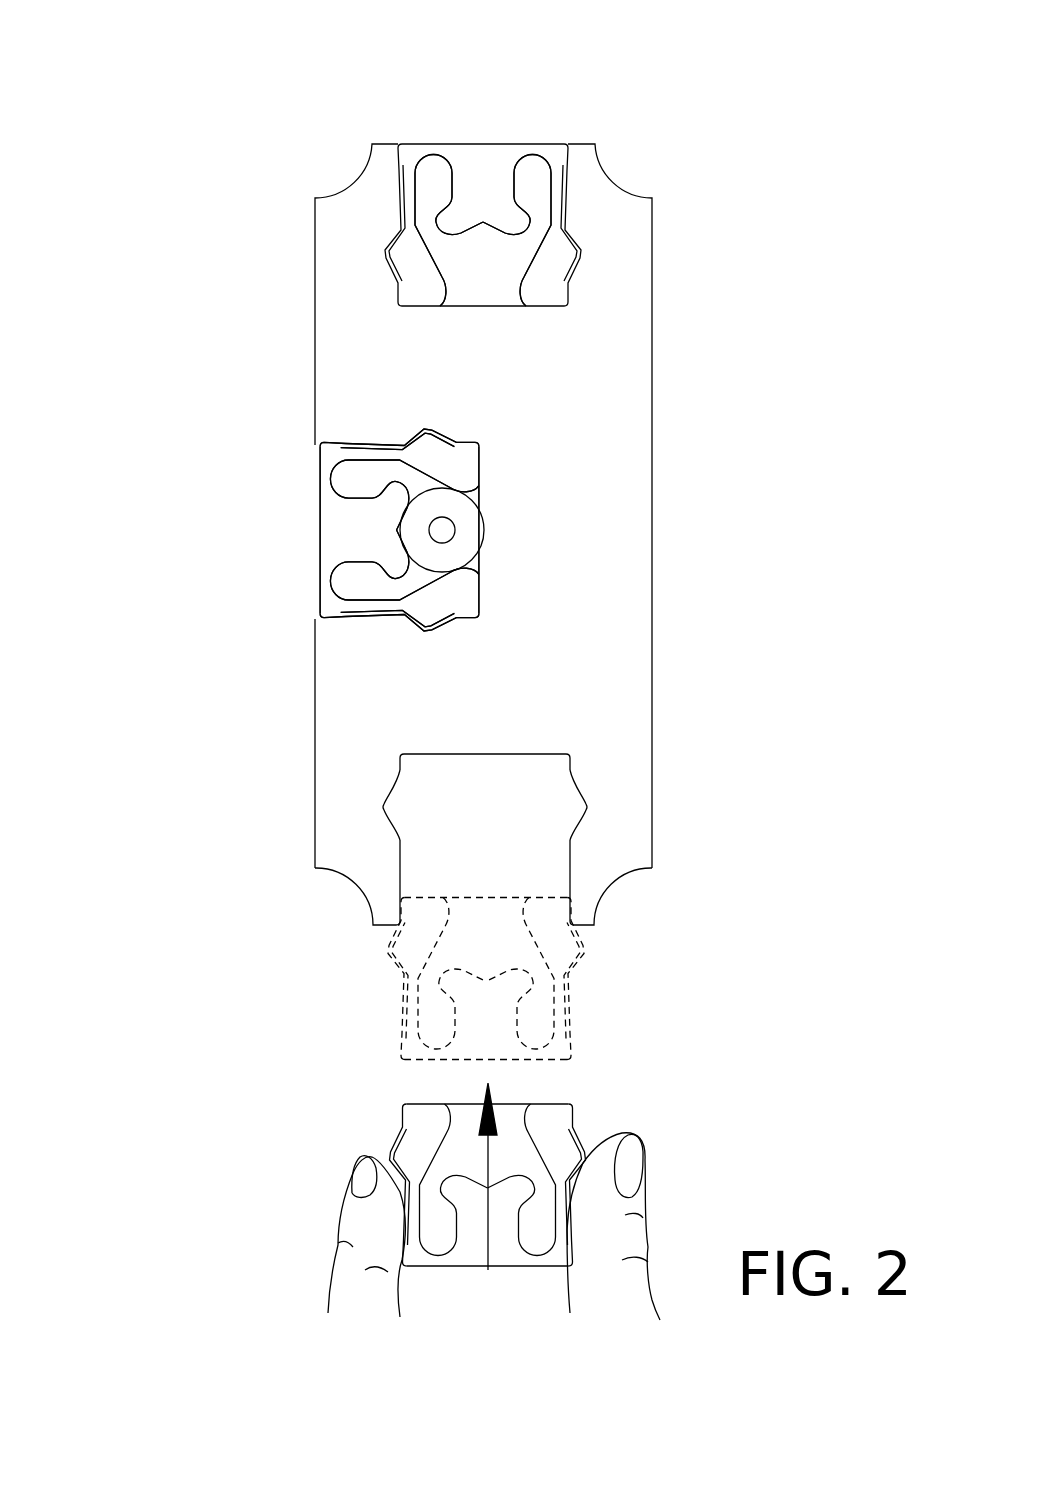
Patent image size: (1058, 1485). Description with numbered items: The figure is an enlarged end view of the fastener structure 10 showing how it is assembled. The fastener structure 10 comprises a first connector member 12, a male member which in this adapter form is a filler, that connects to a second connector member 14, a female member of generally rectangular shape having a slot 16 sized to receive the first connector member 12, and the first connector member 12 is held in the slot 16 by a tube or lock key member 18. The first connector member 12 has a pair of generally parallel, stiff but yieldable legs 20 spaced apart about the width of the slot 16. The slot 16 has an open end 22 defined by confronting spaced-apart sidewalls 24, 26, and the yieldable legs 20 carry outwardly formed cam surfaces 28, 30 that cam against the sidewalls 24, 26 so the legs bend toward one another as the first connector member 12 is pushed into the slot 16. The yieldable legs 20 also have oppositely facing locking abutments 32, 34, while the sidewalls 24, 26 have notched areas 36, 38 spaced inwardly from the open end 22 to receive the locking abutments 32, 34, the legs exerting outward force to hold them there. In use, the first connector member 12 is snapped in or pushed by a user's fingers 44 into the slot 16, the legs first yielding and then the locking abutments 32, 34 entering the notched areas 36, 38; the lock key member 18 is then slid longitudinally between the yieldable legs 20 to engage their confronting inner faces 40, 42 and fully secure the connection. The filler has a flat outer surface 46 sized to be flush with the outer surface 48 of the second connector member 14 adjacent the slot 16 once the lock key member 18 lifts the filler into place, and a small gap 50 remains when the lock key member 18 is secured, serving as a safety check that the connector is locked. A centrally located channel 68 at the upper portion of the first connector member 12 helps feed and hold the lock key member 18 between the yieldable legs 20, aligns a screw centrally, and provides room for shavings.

The fastener structure 10 is at (310, 137).
The first connector member 12 is at (337, 507).
The second connector member 14 is at (583, 482).
The slot 16 is at (497, 795).
The lock key member 18 is at (425, 547).
The yieldable legs 20 is at (457, 467).
The open end 22 is at (483, 907).
The sidewall 24 is at (400, 880).
The sidewall 26 is at (572, 873).
The cam surface 28 is at (452, 432).
The cam surface 30 is at (452, 627).
The locking abutment 32 is at (428, 617).
The locking abutment 34 is at (428, 440).
The notched area 36 is at (382, 808).
The notched area 38 is at (588, 808).
The inner face 40 is at (438, 277).
The inner face 42 is at (523, 282).
The user's fingers 44 is at (637, 1250).
The flat outer surface 46 is at (315, 593).
The outer surface 48 is at (315, 668).
The small gap 50 is at (485, 595).
The centrally located channel 68 is at (483, 223).